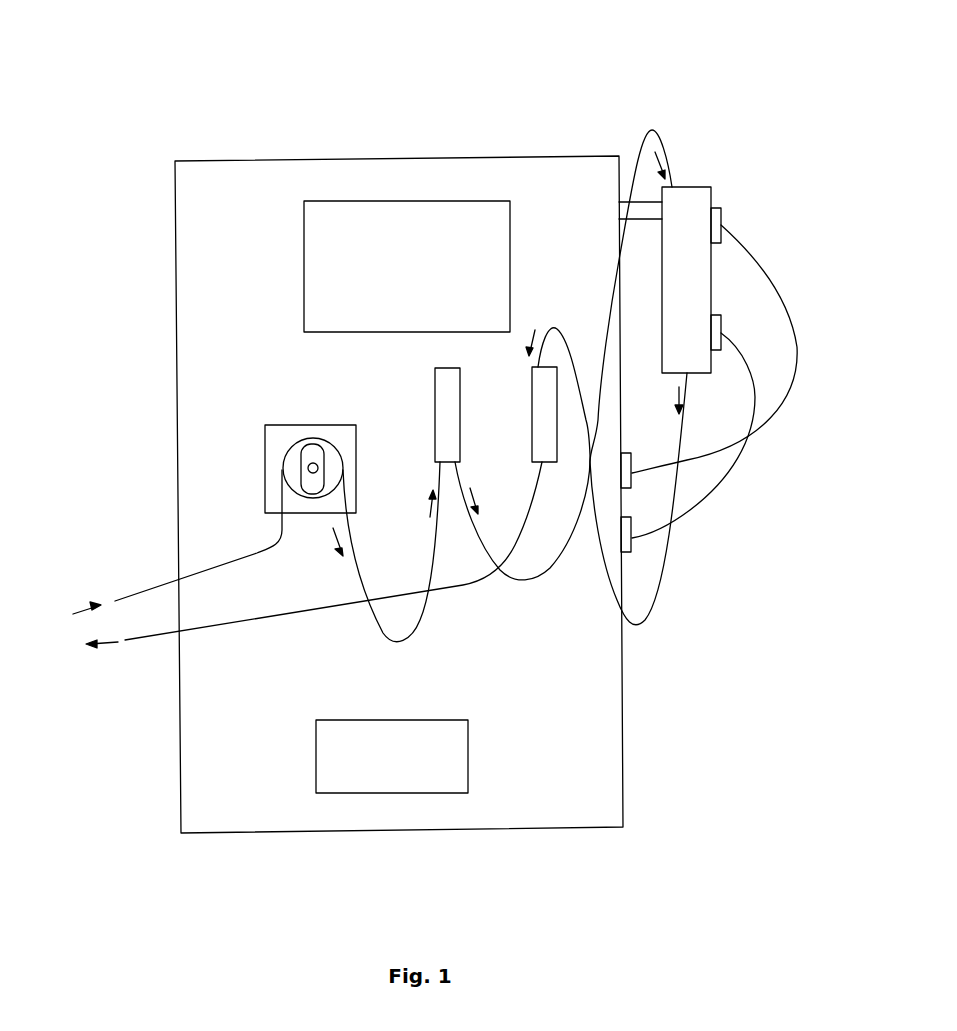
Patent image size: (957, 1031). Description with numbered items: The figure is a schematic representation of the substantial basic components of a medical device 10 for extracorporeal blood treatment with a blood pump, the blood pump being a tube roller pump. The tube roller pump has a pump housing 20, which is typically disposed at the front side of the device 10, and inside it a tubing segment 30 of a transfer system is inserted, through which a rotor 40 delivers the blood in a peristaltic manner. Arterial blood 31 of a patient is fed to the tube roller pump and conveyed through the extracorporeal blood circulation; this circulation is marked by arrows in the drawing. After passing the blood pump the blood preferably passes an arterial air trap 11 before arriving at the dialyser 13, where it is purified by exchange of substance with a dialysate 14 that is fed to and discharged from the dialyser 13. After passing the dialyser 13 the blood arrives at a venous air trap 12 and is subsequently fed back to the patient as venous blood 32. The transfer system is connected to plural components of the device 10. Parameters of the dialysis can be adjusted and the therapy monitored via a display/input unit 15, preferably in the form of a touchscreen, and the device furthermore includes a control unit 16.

The medical device 10 is at (290, 85).
The arterial air trap 11 is at (440, 404).
The venous air trap 12 is at (532, 427).
The dialyser 13 is at (697, 197).
The dialysate 14 is at (797, 345).
The display/input unit 15 is at (316, 237).
The control unit 16 is at (468, 755).
The pump housing 20 is at (283, 432).
The tubing segment 30 is at (282, 503).
The arterial blood 31 is at (78, 605).
The venous blood 32 is at (110, 653).
The rotor 40 is at (305, 445).